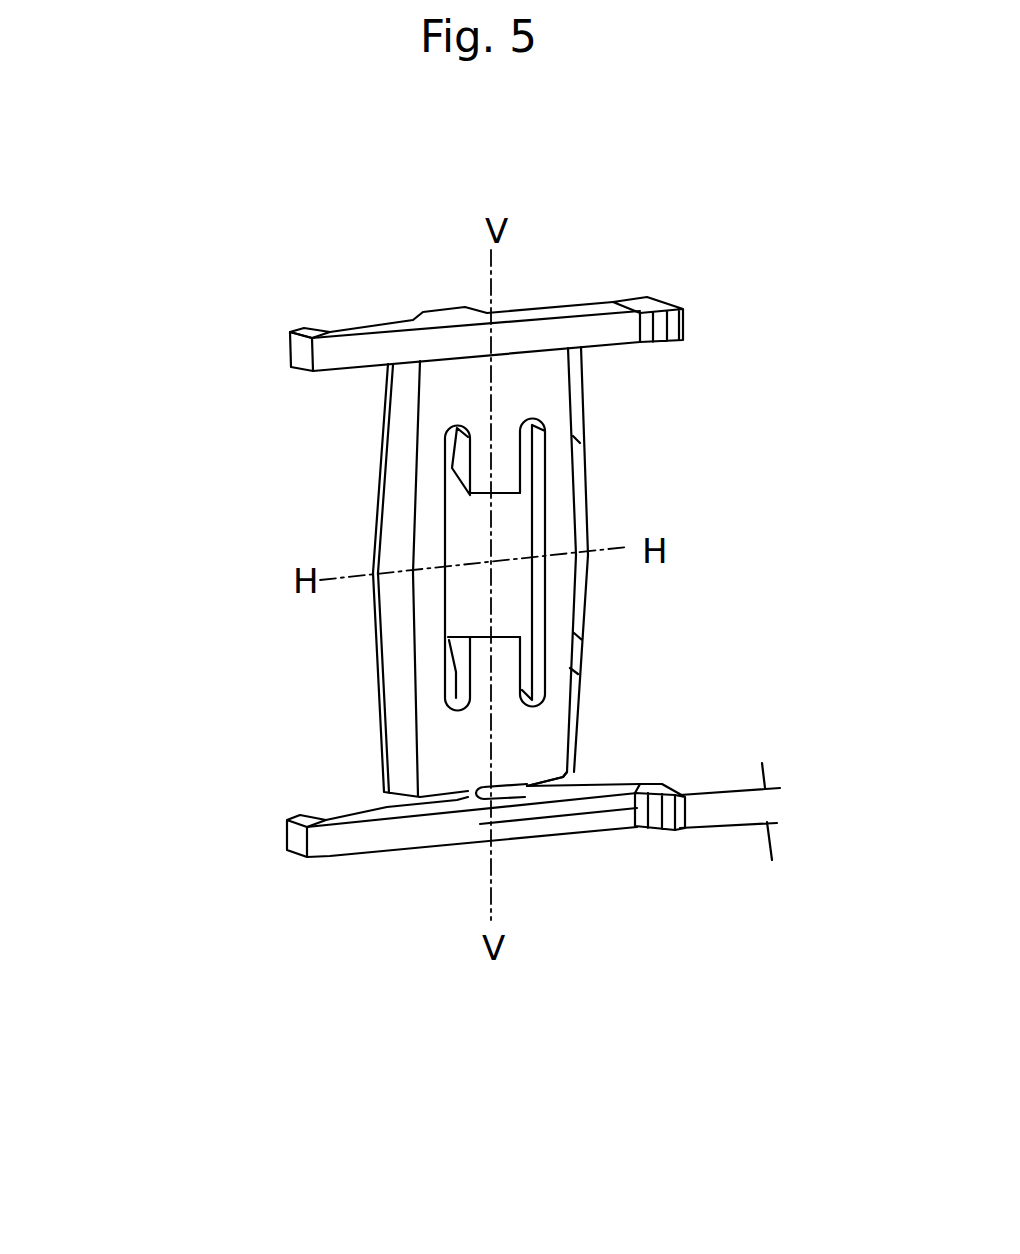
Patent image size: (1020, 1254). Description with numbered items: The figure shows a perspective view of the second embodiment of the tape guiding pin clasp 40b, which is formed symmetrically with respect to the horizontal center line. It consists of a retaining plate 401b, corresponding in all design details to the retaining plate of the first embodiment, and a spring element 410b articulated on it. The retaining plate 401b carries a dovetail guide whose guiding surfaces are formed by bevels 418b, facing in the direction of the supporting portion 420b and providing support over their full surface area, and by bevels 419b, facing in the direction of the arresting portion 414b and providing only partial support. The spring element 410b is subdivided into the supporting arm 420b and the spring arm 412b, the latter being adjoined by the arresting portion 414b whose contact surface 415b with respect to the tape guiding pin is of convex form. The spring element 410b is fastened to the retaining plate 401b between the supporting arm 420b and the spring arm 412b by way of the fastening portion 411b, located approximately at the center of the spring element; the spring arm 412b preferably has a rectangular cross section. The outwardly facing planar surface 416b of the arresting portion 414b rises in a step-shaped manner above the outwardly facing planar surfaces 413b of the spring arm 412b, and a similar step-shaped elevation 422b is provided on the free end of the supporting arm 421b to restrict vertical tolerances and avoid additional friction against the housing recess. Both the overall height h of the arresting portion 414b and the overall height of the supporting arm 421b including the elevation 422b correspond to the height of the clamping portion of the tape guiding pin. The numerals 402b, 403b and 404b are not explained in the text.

The tape guiding pin clasp 40b is at (343, 307).
The retaining plate 401b is at (507, 387).
The central web 402b is at (505, 462).
The slot 403b is at (460, 472).
The lower body portion 404b is at (520, 786).
The spring element 410b is at (442, 843).
The fastening portion 411b is at (457, 803).
The spring arm 412b is at (553, 817).
The outwardly facing planar surfaces of the spring arm 413b is at (545, 315).
The arresting portion 414b is at (660, 787).
The contact surface 415b is at (672, 813).
The outwardly facing planar surface of the arresting portion 416b is at (657, 295).
The bevels 418b is at (395, 530).
The bevels 419b is at (583, 518).
The supporting arm 420b is at (364, 832).
The supporting arm 421b is at (303, 351).
The step-shaped elevation 422b is at (290, 333).
The overall height h is at (760, 804).